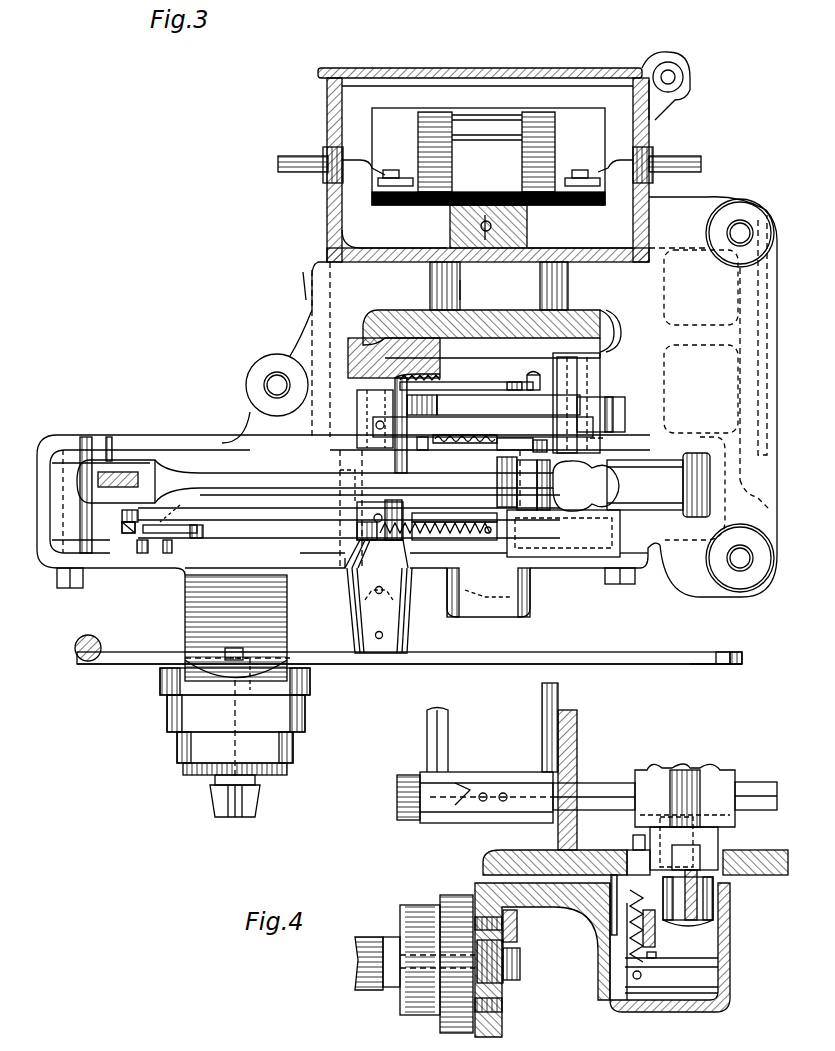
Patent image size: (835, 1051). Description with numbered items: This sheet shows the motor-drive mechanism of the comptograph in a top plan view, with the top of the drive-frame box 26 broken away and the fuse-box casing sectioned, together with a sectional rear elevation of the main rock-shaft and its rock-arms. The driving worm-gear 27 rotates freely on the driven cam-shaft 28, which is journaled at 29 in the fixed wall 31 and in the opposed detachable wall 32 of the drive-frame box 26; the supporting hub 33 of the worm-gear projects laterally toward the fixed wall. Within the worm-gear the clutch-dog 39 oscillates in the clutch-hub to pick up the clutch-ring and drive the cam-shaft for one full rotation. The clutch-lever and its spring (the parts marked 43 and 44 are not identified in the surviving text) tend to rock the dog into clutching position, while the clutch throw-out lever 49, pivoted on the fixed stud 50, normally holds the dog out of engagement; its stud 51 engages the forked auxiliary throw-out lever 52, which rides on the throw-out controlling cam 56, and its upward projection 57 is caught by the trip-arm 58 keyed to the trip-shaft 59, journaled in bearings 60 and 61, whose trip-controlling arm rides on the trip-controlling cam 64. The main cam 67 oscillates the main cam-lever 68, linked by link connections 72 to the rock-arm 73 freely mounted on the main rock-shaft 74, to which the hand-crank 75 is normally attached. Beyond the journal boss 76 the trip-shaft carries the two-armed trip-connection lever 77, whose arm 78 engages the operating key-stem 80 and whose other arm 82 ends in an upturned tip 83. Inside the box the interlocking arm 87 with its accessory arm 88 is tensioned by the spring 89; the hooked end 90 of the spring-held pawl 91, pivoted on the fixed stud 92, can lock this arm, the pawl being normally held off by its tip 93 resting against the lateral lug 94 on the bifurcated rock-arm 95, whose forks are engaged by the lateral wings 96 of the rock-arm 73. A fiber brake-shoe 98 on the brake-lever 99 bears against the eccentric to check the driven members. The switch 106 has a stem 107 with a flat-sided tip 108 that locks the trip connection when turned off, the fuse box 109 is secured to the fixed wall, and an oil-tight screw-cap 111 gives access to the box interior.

In FIG. 3, the drive-frame box 26 is at (499, 397).
In FIG. 4, the drive-frame box 26 is at (731, 985).
In FIG. 3, the driving worm-gear 27 is at (575, 312).
In FIG. 3, the driven cam-shaft 28 is at (530, 590).
In FIG. 3, the cam-shaft journal 29 is at (492, 617).
In FIG. 3, the fixed wall 31 is at (590, 252).
In FIG. 3, the detachable wall 32 is at (322, 570).
In FIG. 4, the detachable wall 32 is at (597, 985).
In FIG. 3, the supporting hub 33 is at (492, 310).
In FIG. 3, the clutch-dog 39 is at (533, 476).
In FIG. 3, the sleeve 43 is at (518, 449).
In FIG. 3, the spring 44 is at (432, 445).
In FIG. 3, the clutch throw-out lever 49 is at (595, 398).
In FIG. 3, the fixed stud 50 is at (604, 441).
In FIG. 3, the stud 51 is at (533, 375).
In FIG. 3, the auxiliary throw-out lever 52 is at (473, 382).
In FIG. 3, the throw-out controlling cam 56 is at (435, 405).
In FIG. 3, the upward projection 57 is at (600, 420).
In FIG. 3, the trip-arm 58 is at (483, 427).
In FIG. 3, the trip-shaft 59 is at (370, 457).
In FIG. 3, the bearing 60 is at (394, 328).
In FIG. 3, the bearing 61 is at (379, 600).
In FIG. 3, the trip-controlling cam 64 is at (487, 394).
In FIG. 3, the main cam 67 is at (366, 498).
In FIG. 3, the main cam-lever 68 is at (603, 485).
In FIG. 3, the link connections 72 is at (250, 472).
In FIG. 4, the link connections 72 is at (688, 926).
In FIG. 3, the rock-arm 73 is at (122, 472).
In FIG. 4, the rock-arm 73 is at (700, 855).
In FIG. 4, the main rock-shaft 74 is at (605, 782).
In FIG. 4, the hand-crank 75 is at (450, 745).
In FIG. 3, the journal boss 76 is at (410, 620).
In FIG. 3, the trip-connection lever 77 is at (418, 664).
In FIG. 4, the trip-connection lever 77 is at (518, 920).
In FIG. 3, the arm 78 is at (112, 664).
In FIG. 3, the operating key-stem 80 is at (75, 644).
In FIG. 3, the arm 82 is at (702, 665).
In FIG. 3, the upwardly projecting tip 83 is at (738, 652).
In FIG. 3, the interlocking arm 87 is at (258, 510).
In FIG. 4, the interlocking arm 87 is at (650, 948).
In FIG. 3, the accessory arm 88 is at (357, 532).
In FIG. 3, the spring 89 is at (440, 540).
In FIG. 3, the hooked end 90 is at (180, 505).
In FIG. 4, the hooked end 90 is at (650, 960).
In FIG. 3, the interlocking spring-held pawl 91 is at (180, 533).
In FIG. 3, the fixed stud 92 is at (142, 558).
In FIG. 4, the fixed stud 92 is at (610, 945).
In FIG. 3, the upwardly projecting tip 93 is at (128, 535).
In FIG. 4, the upwardly projecting tip 93 is at (612, 905).
In FIG. 4, the lateral lug 94 is at (633, 840).
In FIG. 4, the bifurcated rock-arm 95 is at (690, 768).
In FIG. 4, the lateral wings 96 is at (740, 862).
In FIG. 3, the fiber brake-shoe 98 is at (445, 509).
In FIG. 3, the brake-lever 99 is at (470, 522).
In FIG. 3, the switch 106 is at (235, 724).
In FIG. 4, the switch 106 is at (398, 990).
In FIG. 3, the switch-key stem 107 is at (257, 786).
In FIG. 4, the switch-key stem 107 is at (437, 964).
In FIG. 3, the flat sided tip 108 is at (272, 650).
In FIG. 4, the flat sided tip 108 is at (512, 982).
In FIG. 3, the fuse box 109 is at (328, 118).
In FIG. 3, the oil-tight screw-cap 111 is at (302, 278).